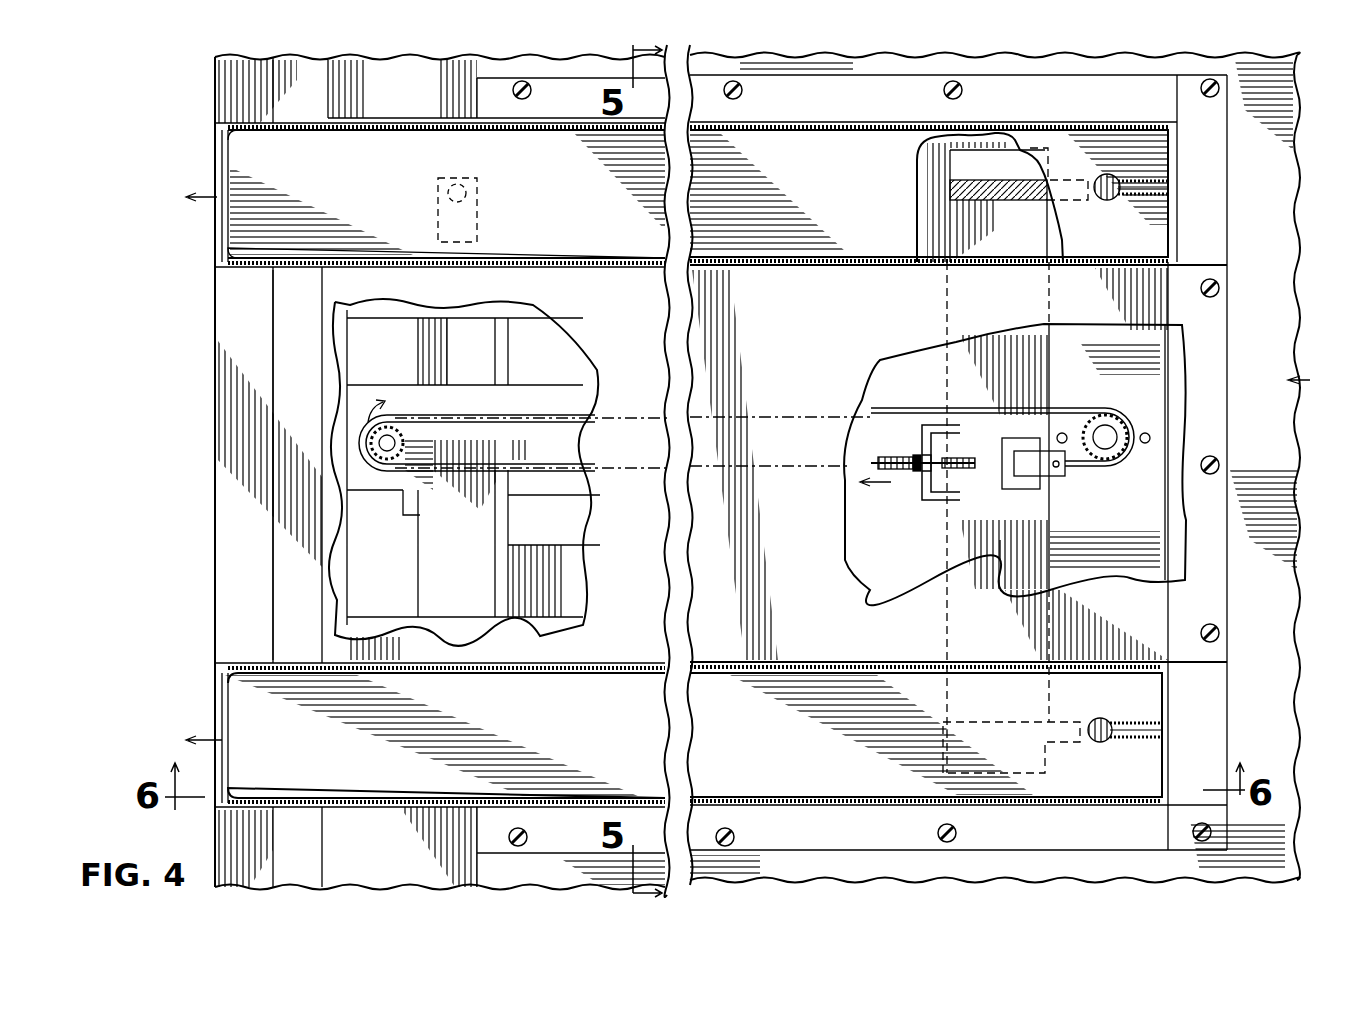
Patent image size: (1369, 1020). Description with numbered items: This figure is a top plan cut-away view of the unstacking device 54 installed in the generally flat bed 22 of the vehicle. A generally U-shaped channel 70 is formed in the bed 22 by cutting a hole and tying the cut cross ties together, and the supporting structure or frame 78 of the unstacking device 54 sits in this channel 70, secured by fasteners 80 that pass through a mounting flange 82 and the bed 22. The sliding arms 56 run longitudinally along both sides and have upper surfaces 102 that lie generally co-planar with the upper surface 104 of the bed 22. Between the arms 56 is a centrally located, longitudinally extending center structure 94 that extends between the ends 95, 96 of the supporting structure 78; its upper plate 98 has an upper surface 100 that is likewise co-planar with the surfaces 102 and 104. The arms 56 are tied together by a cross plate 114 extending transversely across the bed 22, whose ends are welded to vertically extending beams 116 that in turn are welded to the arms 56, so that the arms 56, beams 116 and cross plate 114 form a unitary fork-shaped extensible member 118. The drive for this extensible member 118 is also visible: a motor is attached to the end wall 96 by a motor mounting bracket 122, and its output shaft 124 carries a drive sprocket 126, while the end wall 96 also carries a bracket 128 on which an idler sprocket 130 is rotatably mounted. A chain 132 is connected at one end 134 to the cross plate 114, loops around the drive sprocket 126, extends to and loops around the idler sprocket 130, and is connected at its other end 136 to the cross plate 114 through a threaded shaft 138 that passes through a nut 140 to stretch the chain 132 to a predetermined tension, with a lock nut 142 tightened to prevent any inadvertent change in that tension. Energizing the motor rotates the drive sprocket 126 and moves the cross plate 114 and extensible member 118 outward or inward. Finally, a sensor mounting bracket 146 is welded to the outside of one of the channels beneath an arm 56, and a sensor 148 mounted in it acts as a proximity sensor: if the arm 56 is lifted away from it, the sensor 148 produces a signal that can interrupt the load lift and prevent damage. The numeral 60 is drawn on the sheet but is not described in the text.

The bed 22 is at (1312, 380).
The unstacking device 54 is at (146, 252).
The arms 56 is at (237, 165).
The side member 60 is at (215, 492).
The U-shaped channel 70 is at (392, 593).
The supporting structure 78 is at (1235, 714).
The fasteners 80 is at (528, 98).
The mounting flange 82 is at (1117, 108).
The center structure 94 is at (242, 462).
The end 95 is at (335, 572).
The end wall 96 is at (1160, 535).
The upper plate 98 is at (819, 613).
The upper surface 100 is at (930, 464).
The upper surfaces 102 is at (557, 198).
The upper surface 104 is at (1272, 453).
The cross plate 114 is at (1000, 560).
The beams 116 is at (990, 200).
The extensible member 118 is at (940, 562).
The motor mounting bracket 122 is at (1116, 528).
The output shaft 124 is at (1110, 428).
The drive sprocket 126 is at (1108, 460).
The bracket 128 is at (420, 515).
The idler sprocket 130 is at (393, 424).
The chain 132 is at (503, 415).
The end 134 is at (1028, 489).
The end 136 is at (870, 460).
The threaded shaft 138 is at (906, 458).
The nut 140 is at (958, 487).
The lock nut 142 is at (913, 475).
The sensor mounting bracket 146 is at (438, 215).
The sensor 148 is at (466, 186).